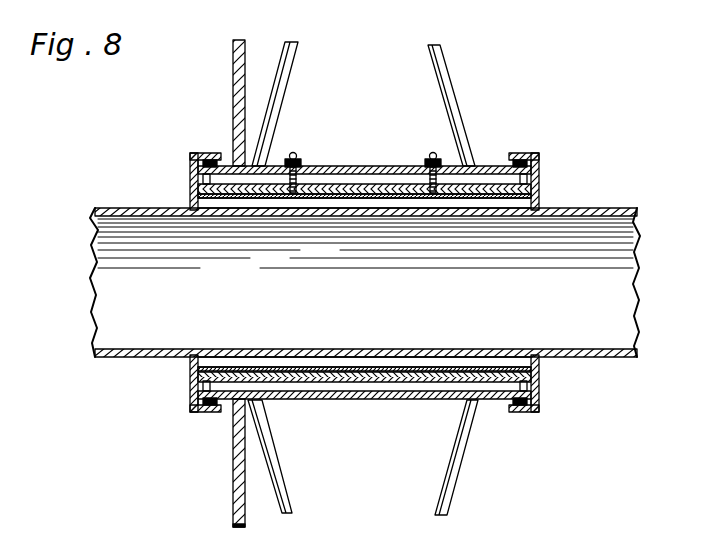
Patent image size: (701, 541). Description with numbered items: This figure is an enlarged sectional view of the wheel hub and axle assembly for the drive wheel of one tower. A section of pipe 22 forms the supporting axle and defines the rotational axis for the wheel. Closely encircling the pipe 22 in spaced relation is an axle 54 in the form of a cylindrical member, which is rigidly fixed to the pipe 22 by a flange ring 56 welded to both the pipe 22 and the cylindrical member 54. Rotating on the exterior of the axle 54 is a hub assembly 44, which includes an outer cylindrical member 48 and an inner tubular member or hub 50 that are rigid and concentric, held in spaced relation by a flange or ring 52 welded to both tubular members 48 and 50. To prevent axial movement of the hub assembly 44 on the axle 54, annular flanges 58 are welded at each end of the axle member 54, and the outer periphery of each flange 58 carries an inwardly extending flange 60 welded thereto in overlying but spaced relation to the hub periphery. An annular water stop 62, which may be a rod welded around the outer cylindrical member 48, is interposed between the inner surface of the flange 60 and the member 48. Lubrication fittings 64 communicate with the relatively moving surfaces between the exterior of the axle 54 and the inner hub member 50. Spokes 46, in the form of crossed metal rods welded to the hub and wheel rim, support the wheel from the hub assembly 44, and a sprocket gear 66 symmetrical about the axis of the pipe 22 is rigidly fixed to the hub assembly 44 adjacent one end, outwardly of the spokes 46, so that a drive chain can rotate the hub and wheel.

The pipe 22 is at (608, 210).
The hub assembly 44 is at (478, 158).
The spokes 46 is at (445, 82).
The outer cylindrical member 48 is at (330, 171).
The inner tubular member or hub 50 is at (369, 186).
The flange or ring 52 is at (540, 186).
The axle 54 is at (469, 199).
The flange ring 56 is at (200, 200).
The annular flanges 58 is at (188, 178).
The inwardly extending flange 60 is at (203, 153).
The annular water stop 62 is at (536, 160).
The lubrication fittings 64 is at (296, 154).
The sprocket gear 66 is at (252, 33).